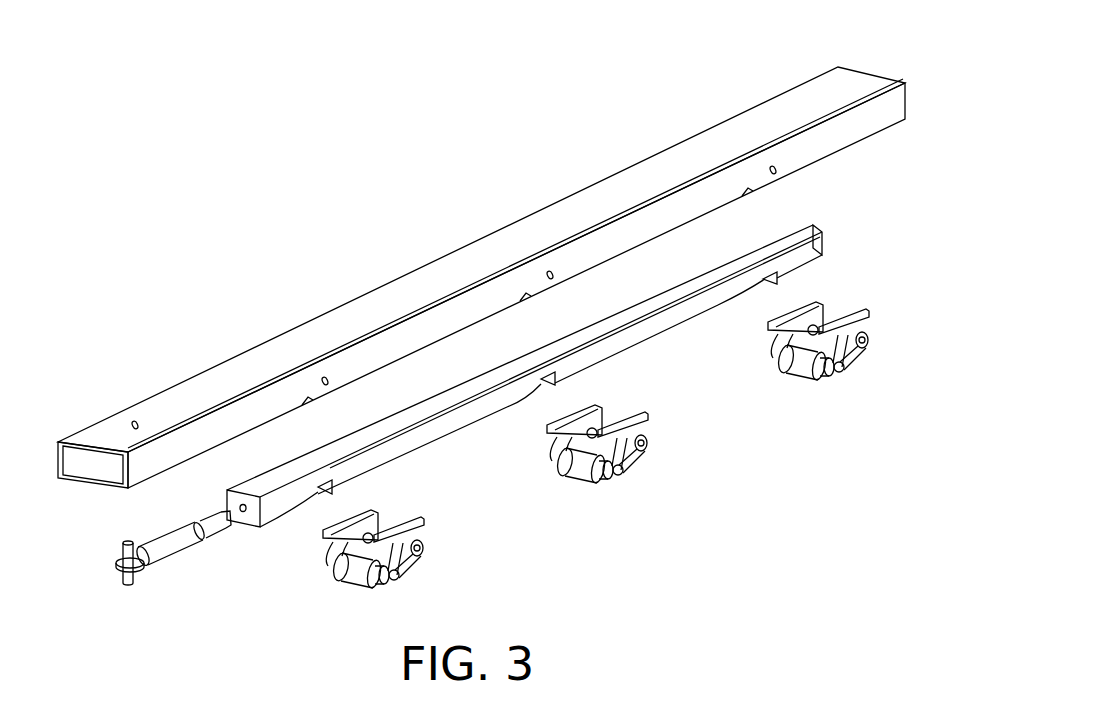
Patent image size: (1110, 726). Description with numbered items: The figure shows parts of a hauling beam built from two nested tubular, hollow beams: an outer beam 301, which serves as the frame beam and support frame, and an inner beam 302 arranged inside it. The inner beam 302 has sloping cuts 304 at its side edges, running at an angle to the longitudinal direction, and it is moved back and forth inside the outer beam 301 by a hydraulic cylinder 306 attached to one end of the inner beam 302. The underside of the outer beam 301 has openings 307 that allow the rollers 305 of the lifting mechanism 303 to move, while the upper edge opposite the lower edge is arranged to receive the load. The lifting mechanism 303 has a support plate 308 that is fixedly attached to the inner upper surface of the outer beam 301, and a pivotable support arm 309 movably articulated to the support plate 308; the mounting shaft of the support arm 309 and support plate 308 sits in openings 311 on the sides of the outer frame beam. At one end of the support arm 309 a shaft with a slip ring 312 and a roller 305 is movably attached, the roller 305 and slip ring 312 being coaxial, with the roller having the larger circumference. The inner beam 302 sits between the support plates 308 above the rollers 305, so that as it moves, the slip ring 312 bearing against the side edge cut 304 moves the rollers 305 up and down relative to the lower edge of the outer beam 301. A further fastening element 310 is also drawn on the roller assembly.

The outer beam 301 is at (437, 257).
The inner beam 302 is at (783, 236).
The lifting mechanism 303 is at (572, 492).
The sloping cuts 304 is at (302, 508).
The roller 305 is at (349, 587).
The hydraulic cylinder 306 is at (172, 557).
The openings 307 is at (307, 407).
The support plate 308 is at (398, 532).
The support arm 309 is at (428, 581).
The fastener nut 310 is at (451, 559).
The openings 311 is at (333, 381).
The slip ring 312 is at (370, 608).